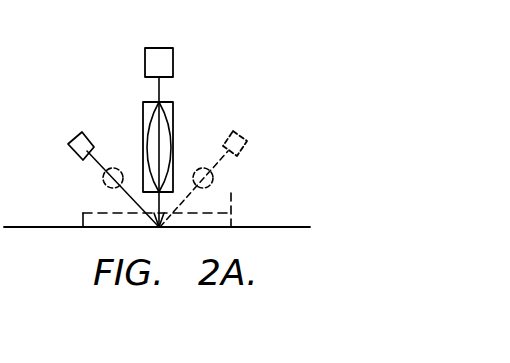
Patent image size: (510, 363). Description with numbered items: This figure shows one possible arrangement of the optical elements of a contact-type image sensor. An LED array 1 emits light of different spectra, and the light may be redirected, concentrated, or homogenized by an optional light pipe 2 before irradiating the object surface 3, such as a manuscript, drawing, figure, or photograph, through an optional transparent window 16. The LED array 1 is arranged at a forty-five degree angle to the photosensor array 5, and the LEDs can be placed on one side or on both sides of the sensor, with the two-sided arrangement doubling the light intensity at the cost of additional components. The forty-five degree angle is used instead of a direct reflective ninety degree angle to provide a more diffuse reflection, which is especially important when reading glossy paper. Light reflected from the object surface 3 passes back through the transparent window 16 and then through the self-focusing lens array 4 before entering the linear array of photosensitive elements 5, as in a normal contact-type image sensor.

The LED array 1 is at (70, 137).
The light pipe 2 is at (102, 182).
The object surface 3 is at (277, 227).
The self-focusing lens array 4 is at (186, 105).
The linear array of photosensitive elements 5 is at (174, 62).
The transparent window 16 is at (231, 190).